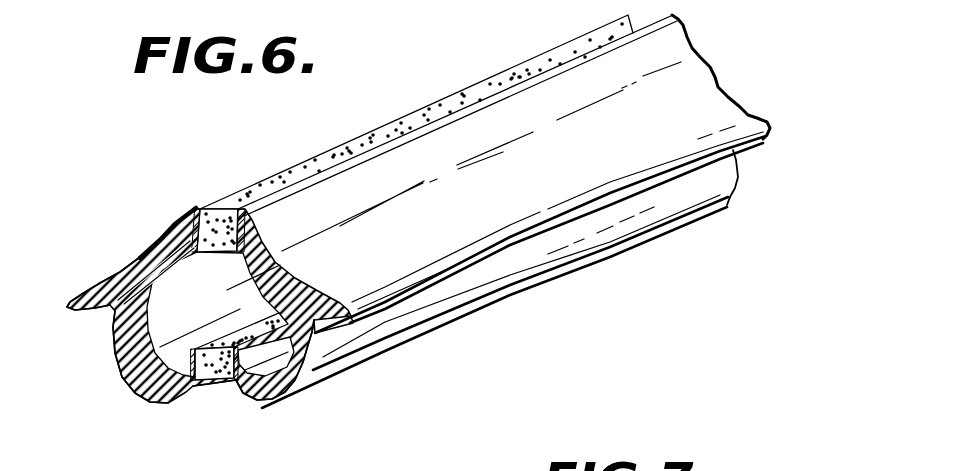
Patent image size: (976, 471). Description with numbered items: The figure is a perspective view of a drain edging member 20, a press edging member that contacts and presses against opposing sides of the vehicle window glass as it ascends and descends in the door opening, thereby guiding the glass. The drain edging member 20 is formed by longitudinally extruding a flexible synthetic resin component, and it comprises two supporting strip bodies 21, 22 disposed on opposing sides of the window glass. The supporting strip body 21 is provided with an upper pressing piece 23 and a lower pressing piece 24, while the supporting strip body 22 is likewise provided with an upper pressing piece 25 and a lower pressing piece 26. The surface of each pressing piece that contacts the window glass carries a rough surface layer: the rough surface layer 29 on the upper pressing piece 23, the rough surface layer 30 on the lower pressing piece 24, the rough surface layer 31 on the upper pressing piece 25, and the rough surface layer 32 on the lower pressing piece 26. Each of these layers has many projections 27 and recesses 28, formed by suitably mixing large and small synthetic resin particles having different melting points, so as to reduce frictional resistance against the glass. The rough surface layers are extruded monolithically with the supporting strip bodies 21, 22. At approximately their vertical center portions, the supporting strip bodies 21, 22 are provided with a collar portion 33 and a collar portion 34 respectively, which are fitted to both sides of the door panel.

The drain edging member 20 is at (145, 258).
The supporting strip body 21 is at (128, 275).
The supporting strip body 22 is at (404, 219).
The upper pressing piece 23 is at (183, 243).
The lower pressing piece 24 is at (183, 384).
The upper pressing piece 25 is at (667, 40).
The lower pressing piece 26 is at (290, 404).
The projections 27 is at (345, 127).
The recesses 28 is at (445, 82).
The rough surface layer 29 is at (200, 212).
The rough surface layer 30 is at (118, 375).
The rough surface layer 31 is at (236, 256).
The rough surface layer 32 is at (258, 404).
The collar portion 33 is at (82, 296).
The collar portion 34 is at (343, 328).